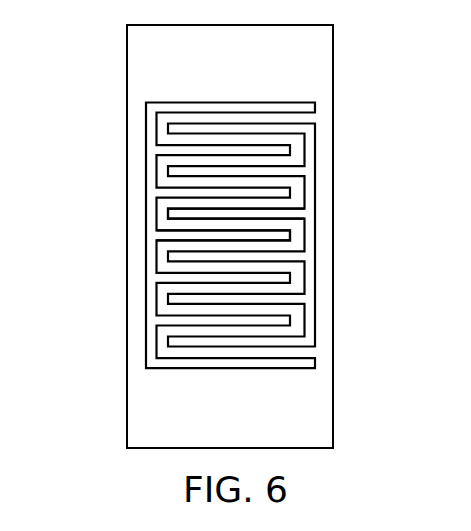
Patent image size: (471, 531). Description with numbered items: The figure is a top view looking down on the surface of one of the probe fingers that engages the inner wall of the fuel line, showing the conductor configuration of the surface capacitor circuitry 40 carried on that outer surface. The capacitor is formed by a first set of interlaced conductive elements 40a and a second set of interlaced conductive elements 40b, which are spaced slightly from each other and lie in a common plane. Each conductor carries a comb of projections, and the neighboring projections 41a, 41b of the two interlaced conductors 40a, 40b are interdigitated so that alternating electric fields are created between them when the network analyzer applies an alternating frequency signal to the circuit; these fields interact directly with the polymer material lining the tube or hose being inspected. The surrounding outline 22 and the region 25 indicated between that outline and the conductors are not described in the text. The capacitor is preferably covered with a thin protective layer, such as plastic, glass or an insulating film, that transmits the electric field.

The substrate 22 is at (316, 55).
The sensing region 25 is at (139, 275).
The surface capacitor circuitry 40 is at (230, 236).
The first set of interlaced conductive elements 40a is at (146, 150).
The second set of interlaced conductive elements 40b is at (314, 167).
The projection 41a is at (288, 234).
The projection 41b is at (171, 214).